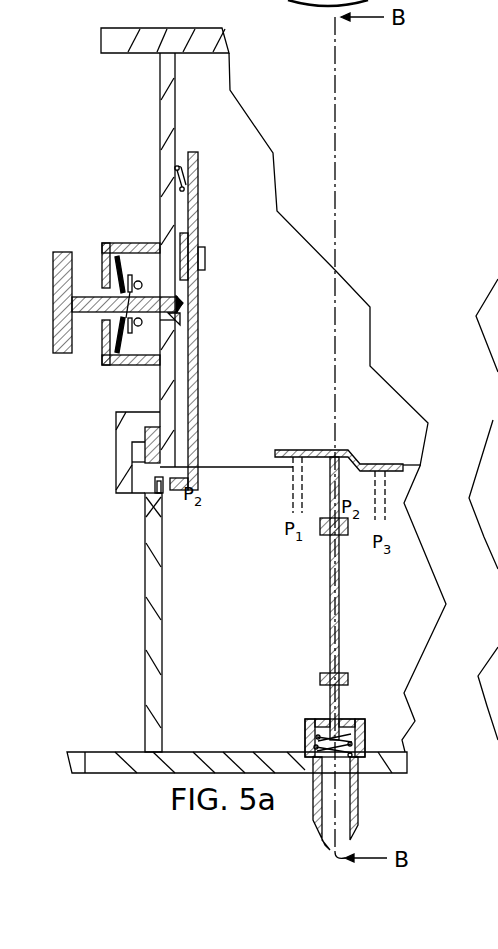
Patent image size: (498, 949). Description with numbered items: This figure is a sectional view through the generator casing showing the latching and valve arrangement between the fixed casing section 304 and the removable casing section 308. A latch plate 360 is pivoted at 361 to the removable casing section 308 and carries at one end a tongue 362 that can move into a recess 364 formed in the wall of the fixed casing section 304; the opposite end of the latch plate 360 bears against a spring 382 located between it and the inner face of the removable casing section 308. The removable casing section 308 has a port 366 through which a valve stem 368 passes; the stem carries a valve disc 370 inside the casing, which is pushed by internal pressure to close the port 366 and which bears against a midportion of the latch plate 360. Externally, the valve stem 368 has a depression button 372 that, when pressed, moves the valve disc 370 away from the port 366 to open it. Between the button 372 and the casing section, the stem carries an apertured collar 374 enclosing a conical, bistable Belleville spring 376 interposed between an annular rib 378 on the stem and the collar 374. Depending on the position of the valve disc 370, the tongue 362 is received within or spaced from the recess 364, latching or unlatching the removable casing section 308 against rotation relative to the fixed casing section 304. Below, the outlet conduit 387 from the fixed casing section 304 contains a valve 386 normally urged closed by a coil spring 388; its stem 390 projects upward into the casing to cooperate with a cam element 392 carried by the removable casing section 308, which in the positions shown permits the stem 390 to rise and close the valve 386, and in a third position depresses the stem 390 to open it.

The fixed casing section 304 is at (141, 624).
The removable casing section 308 is at (156, 70).
The latch plate 360 is at (200, 368).
The pivot 361 is at (183, 252).
The tongue 362 is at (168, 487).
The recess 364 is at (147, 497).
The port 366 is at (131, 248).
The valve stem 368 is at (221, 291).
The valve disc 370 is at (182, 322).
The depression button 372 is at (52, 258).
The apertured collar 374 is at (100, 265).
The Belleville spring 376 is at (102, 345).
The annular rib 378 is at (130, 330).
The spring 382 is at (181, 178).
The valve 386 is at (345, 720).
The outlet conduit 387 is at (358, 800).
The coil spring 388 is at (318, 737).
The stem 390 is at (332, 607).
The cam element 392 is at (345, 455).